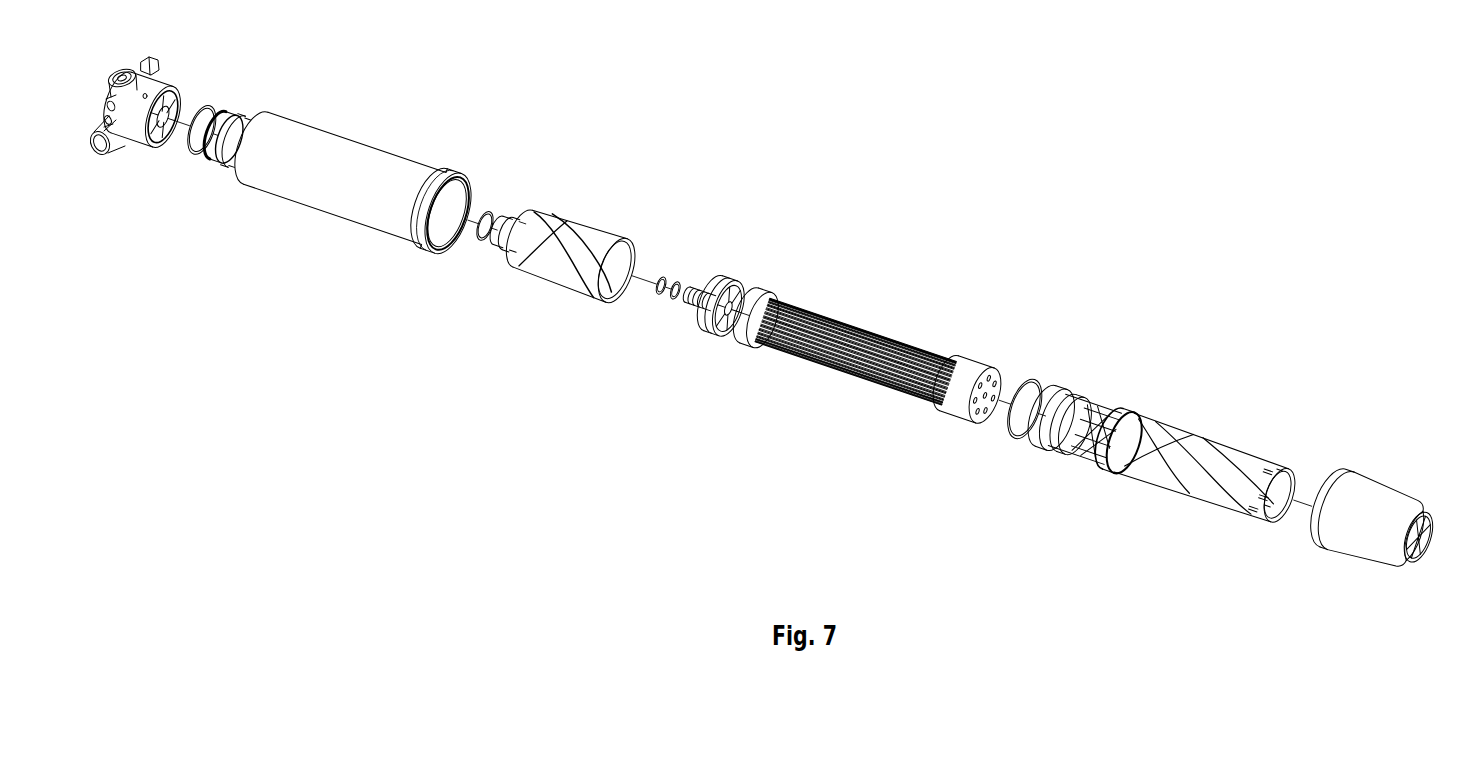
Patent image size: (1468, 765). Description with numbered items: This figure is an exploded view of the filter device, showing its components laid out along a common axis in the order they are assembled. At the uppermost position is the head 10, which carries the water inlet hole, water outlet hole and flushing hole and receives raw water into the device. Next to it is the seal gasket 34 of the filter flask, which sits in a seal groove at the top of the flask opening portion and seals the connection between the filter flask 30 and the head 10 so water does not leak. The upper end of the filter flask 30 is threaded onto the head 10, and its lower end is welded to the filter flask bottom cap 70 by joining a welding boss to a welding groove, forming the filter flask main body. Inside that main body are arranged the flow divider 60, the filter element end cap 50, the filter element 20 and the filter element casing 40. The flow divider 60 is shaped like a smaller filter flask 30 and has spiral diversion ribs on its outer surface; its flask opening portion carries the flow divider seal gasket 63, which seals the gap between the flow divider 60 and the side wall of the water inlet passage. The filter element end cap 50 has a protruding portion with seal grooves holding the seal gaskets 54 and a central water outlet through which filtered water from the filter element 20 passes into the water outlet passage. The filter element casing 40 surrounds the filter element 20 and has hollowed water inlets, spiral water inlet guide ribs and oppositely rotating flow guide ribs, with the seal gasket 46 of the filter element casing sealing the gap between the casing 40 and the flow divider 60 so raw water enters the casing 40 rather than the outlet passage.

The head 10 is at (163, 88).
The seal gasket of the filter flask 34 is at (182, 153).
The filter flask 30 is at (347, 153).
The flow divider seal gasket 63 is at (483, 248).
The flow divider 60 is at (555, 227).
The seal gasket 54 is at (678, 307).
The filter element end cap 50 is at (725, 283).
The filter element 20 is at (825, 333).
The seal gasket of the filter element casing 46 is at (1022, 447).
The filter element casing 40 is at (1153, 432).
The filter flask bottom cap 70 is at (1363, 492).